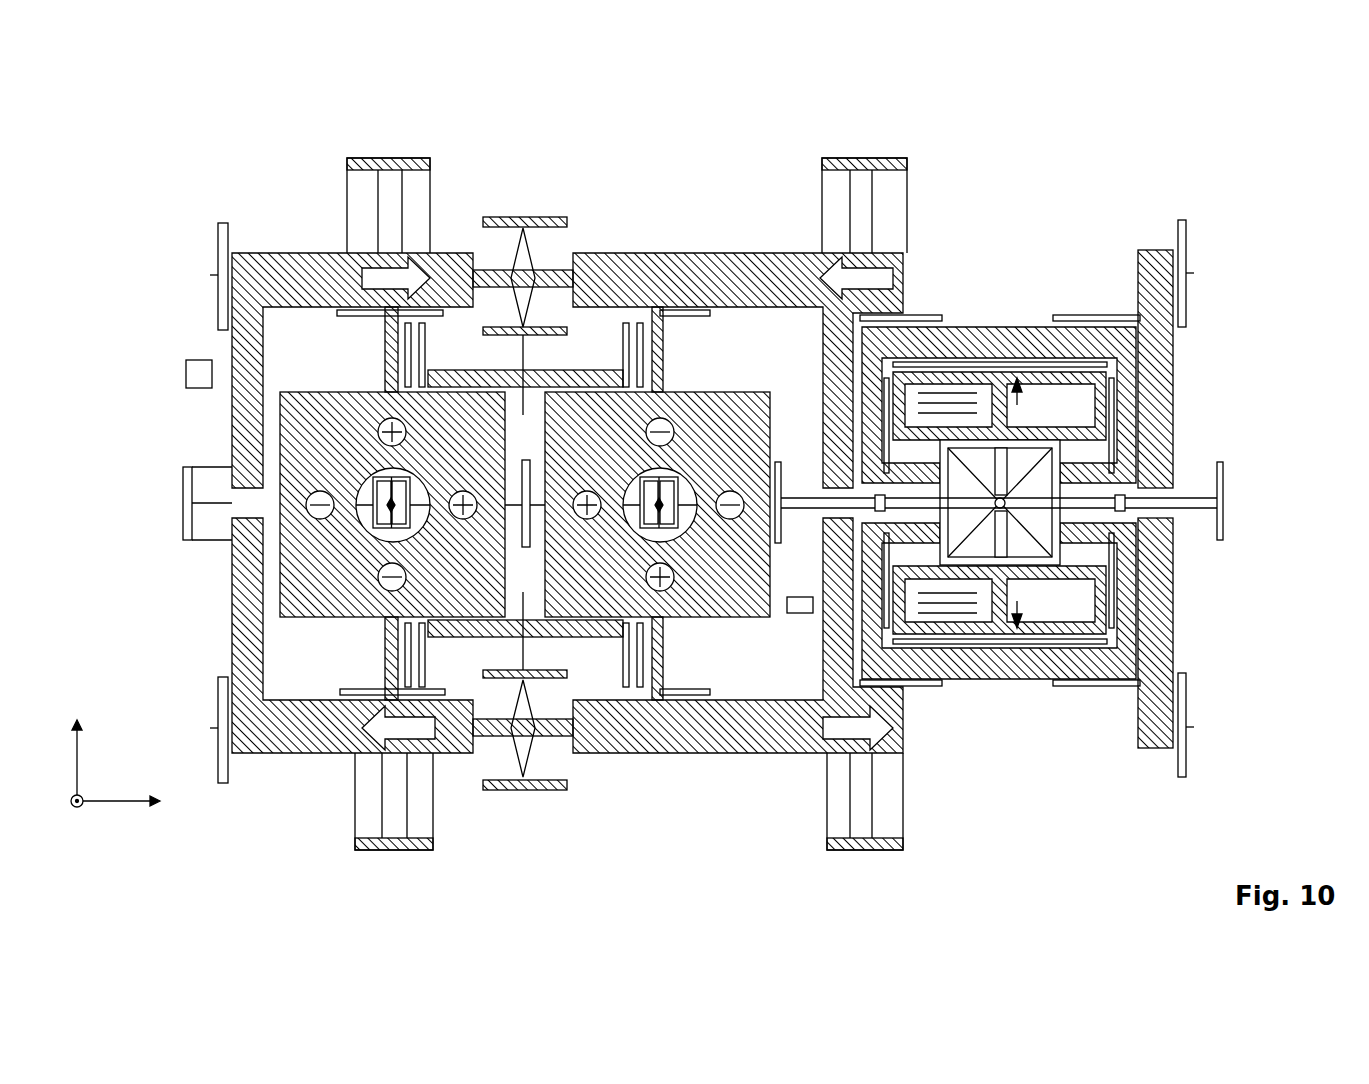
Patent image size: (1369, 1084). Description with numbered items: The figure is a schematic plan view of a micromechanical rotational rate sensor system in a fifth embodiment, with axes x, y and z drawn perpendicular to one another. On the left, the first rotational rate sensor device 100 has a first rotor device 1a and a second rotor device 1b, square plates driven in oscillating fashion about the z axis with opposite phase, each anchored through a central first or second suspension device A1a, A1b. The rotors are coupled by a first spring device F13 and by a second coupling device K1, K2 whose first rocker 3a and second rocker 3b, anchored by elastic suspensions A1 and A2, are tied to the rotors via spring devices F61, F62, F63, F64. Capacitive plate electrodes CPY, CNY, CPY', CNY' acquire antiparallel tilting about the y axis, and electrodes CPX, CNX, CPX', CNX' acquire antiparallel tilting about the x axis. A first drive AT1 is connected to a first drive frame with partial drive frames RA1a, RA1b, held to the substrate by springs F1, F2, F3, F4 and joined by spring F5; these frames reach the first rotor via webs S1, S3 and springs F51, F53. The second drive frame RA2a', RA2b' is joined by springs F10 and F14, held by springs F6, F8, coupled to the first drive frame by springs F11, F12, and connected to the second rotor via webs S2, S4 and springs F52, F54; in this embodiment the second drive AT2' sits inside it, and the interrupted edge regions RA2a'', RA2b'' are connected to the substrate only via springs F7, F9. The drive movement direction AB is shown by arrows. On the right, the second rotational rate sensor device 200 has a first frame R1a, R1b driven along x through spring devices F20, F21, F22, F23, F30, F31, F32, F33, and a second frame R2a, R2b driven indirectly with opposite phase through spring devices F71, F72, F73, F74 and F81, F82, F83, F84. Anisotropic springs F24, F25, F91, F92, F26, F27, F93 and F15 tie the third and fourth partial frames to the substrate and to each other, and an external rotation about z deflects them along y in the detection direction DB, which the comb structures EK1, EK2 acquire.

The first rotational rate sensor device 100 is at (578, 165).
The second rotational rate sensor device 200 is at (1008, 165).
The first rotor device 1a is at (310, 600).
The second rotor device 1b is at (700, 600).
The first rocker 3a is at (548, 372).
The second rocker 3b is at (560, 640).
The first partial drive frame RA1a is at (275, 270).
The second partial drive frame RA1b is at (275, 740).
The third partial drive frame RA2a' is at (776, 338).
The fourth partial drive frame RA2b' is at (776, 670).
The outer frame part upper RA2a'' is at (1225, 369).
The outer frame part lower RA2b'' is at (1237, 633).
The first partial frame R1a is at (1000, 327).
The second partial frame R1b is at (1000, 660).
The third partial frame R2a is at (1060, 372).
The fourth partial frame R2b is at (1060, 634).
The direction of drive movement AB is at (415, 270).
The direction of detection movement DB is at (1022, 412).
The first elastic suspension A1 is at (538, 356).
The second elastic suspension A2 is at (502, 713).
The first suspension device A1a is at (380, 517).
The second suspension device A1b is at (672, 520).
The first drive AT1 is at (186, 372).
The second drive AT2' is at (761, 647).
The third acquisition device EK1 is at (950, 393).
The third acquisition device EK2 is at (960, 615).
The first part of second coupling device K1 is at (530, 295).
The second part of second coupling device K2 is at (530, 740).
The web S1 is at (385, 362).
The web S2 is at (663, 345).
The web S3 is at (385, 660).
The web S4 is at (660, 700).
The first acquisition device electrode CNY is at (421, 433).
The second acquisition device electrode CPX is at (316, 490).
The second acquisition device electrode CNX is at (462, 490).
The first acquisition device electrode CPY is at (418, 578).
The second acquisition device electrode CPX' is at (585, 490).
The first acquisition device electrode CNY' is at (692, 433).
The second acquisition device electrode CNX' is at (731, 490).
The first acquisition device electrode CPY' is at (629, 578).
The spring F1 is at (390, 158).
The spring F2 is at (218, 262).
The spring F3 is at (390, 850).
The spring F4 is at (210, 768).
The spring F5 is at (183, 503).
The spring F6 is at (860, 157).
The spring F7 is at (1186, 240).
The spring F8 is at (855, 850).
The spring F9 is at (1194, 745).
The spring F10 is at (1225, 503).
The spring F11 is at (523, 217).
The spring F12 is at (523, 790).
The first spring device F13 is at (505, 678).
The spring F14 is at (772, 460).
The anisotropic spring device F15 is at (1055, 450).
The spring device F20 is at (940, 315).
The spring device F21 is at (1100, 315).
The spring device F22 is at (940, 686).
The spring device F23 is at (1100, 686).
The anisotropic spring device F24 is at (893, 372).
The spring element F25 is at (1113, 362).
The anisotropic spring device F26 is at (893, 650).
The anisotropic spring device F27 is at (1100, 655).
The spring device F30 is at (930, 483).
The spring device F31 is at (1010, 490).
The spring device F32 is at (893, 530).
The spring device F33 is at (1060, 535).
The spring F51 is at (345, 315).
The spring F52 is at (690, 310).
The spring F53 is at (345, 692).
The spring F54 is at (690, 695).
The spring device F61 is at (428, 355).
The spring device F62 is at (630, 322).
The spring device F63 is at (428, 655).
The spring device F64 is at (630, 690).
The spring device F71 is at (887, 400).
The spring device F72 is at (1113, 405).
The spring device F73 is at (893, 440).
The spring device F74 is at (1113, 450).
The spring device F81 is at (887, 590).
The spring device F82 is at (1113, 556).
The spring device F83 is at (893, 620).
The spring device F84 is at (1113, 600).
The anisotropic spring device F91 is at (905, 470).
The anisotropic spring device F92 is at (1060, 470).
The anisotropic spring device F93 is at (905, 540).
The third axis x is at (118, 820).
The second axis y is at (69, 759).
The first axis z is at (66, 819).